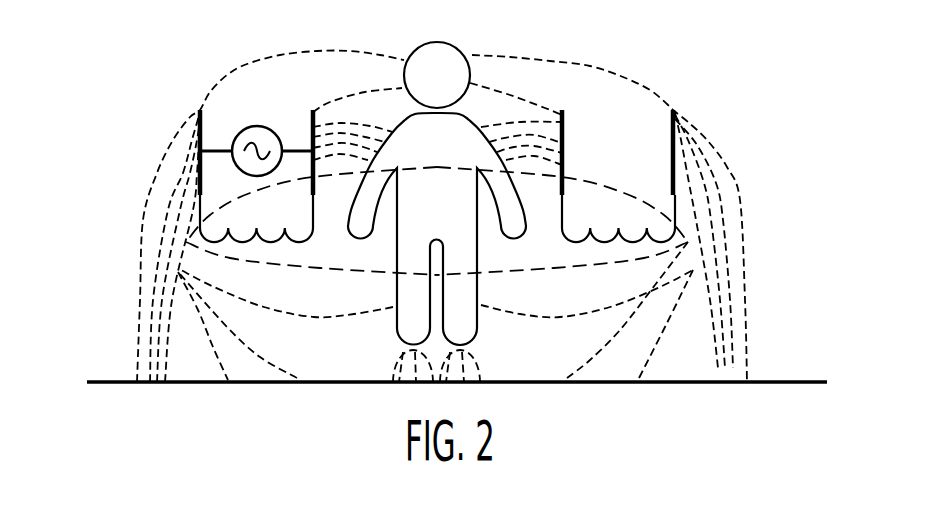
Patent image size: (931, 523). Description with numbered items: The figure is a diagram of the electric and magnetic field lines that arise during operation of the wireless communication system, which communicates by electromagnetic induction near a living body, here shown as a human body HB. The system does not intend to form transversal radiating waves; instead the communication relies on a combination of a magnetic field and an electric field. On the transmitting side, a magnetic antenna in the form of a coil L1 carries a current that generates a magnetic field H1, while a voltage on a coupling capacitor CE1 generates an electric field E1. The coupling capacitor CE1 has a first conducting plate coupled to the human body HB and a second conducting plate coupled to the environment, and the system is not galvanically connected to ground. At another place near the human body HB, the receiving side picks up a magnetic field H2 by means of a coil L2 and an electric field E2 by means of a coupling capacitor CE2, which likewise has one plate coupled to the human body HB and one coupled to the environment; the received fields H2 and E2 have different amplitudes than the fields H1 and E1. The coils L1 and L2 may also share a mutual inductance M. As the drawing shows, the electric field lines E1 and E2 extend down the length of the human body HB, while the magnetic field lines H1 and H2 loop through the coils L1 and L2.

The human body HB is at (437, 62).
The mutual inductance M is at (437, 229).
The coupling capacitor CE1 is at (313, 125).
The coupling capacitor CE2 is at (673, 137).
The coil L1 is at (256, 218).
The coil L2 is at (618, 218).
The magnetic field H1 is at (368, 275).
The magnetic field H2 is at (527, 273).
The electric field E1 is at (139, 282).
The electric field E2 is at (745, 292).